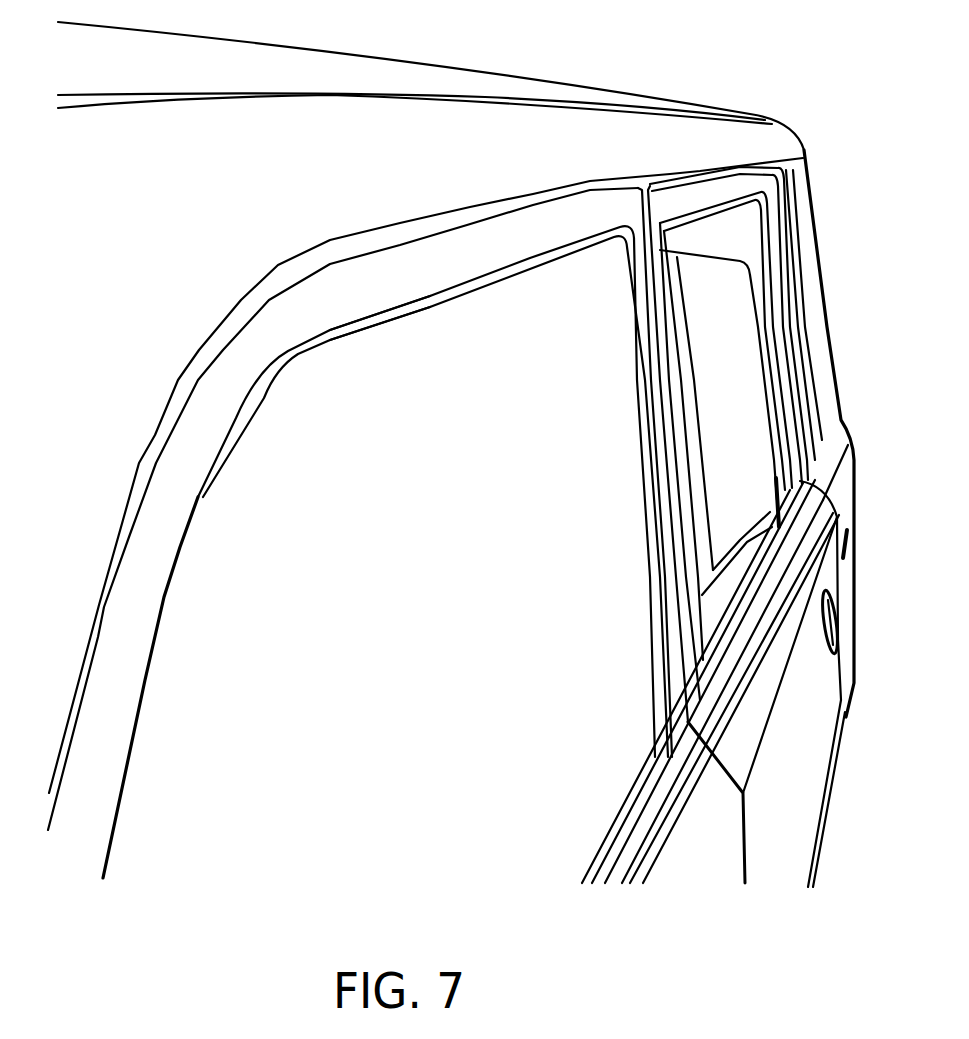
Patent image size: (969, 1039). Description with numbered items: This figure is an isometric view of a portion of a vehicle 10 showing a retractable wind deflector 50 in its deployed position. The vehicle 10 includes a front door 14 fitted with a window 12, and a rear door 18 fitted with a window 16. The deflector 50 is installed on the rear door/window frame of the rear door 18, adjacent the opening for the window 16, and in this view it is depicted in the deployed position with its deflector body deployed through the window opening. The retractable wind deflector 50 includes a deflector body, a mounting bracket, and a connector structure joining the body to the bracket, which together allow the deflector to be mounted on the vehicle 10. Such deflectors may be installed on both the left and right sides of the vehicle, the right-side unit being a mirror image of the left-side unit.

The vehicle 10 is at (505, 68).
The window 12 is at (447, 668).
The front door 14 is at (687, 847).
The window 16 is at (722, 230).
The rear door 18 is at (807, 748).
The retractable wind deflector 50 is at (737, 380).